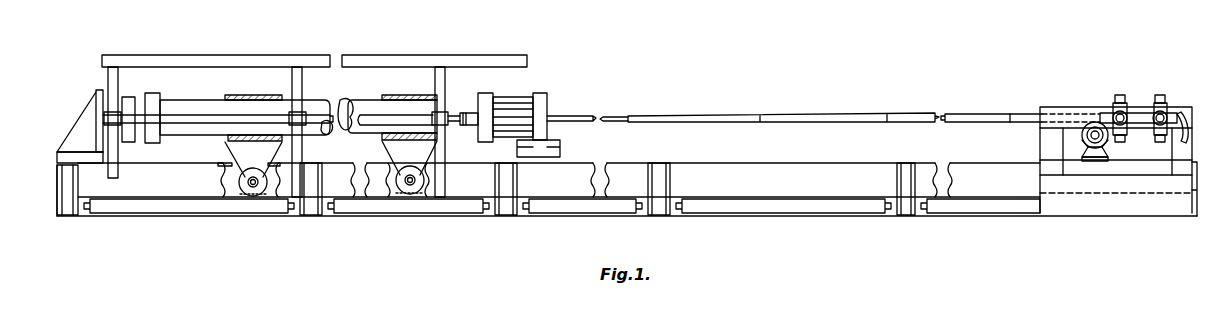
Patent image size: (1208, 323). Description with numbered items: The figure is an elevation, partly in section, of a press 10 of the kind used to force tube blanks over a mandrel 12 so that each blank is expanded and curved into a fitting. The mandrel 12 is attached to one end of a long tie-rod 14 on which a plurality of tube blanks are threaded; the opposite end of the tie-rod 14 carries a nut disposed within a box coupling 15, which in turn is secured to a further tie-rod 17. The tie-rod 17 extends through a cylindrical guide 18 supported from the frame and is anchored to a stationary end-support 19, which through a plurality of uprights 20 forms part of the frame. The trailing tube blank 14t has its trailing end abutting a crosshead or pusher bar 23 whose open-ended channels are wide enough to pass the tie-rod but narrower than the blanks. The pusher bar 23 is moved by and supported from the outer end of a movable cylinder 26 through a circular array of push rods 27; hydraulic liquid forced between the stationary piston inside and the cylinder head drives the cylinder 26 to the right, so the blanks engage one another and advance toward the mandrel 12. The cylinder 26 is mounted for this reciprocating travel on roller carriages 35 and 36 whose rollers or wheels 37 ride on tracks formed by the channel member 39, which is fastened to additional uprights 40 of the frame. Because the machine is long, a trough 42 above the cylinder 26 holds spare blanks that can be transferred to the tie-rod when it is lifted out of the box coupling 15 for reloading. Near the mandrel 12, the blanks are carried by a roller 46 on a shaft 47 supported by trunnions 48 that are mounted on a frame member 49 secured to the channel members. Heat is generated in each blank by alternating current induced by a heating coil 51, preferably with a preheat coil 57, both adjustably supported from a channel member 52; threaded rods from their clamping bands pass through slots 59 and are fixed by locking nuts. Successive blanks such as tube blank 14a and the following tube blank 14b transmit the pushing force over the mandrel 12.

The press 10 is at (712, 53).
The mandrel 12 is at (1180, 128).
The tie-rod 14 is at (595, 117).
The tube blank 14a is at (1018, 117).
The tube blank 14b is at (963, 117).
The trailing tube blank 14t is at (556, 120).
The box coupling 15 is at (482, 118).
The tie-rod 17 is at (335, 118).
The cylindrical guide 18 is at (358, 118).
The stationary end-support 19 is at (88, 118).
The uprights 20 is at (59, 192).
The crosshead or pusher bar 23 is at (538, 98).
The movable cylinder 26 is at (183, 108).
The push rods 27 is at (503, 107).
The roller carriage 35 is at (250, 98).
The roller carriage 36 is at (399, 97).
The rollers or wheels 37 is at (262, 184).
The channel member 39 is at (236, 188).
The uprights 40 is at (312, 203).
The trough 42 is at (195, 62).
The roller 46 is at (1086, 141).
The shaft 47 is at (1108, 139).
The trunnions 48 is at (1102, 132).
The frame member 49 is at (1095, 156).
The heating coil 51 is at (1160, 94).
The channel member 52 is at (1066, 108).
The preheat coil 57 is at (1120, 94).
The slots 59 is at (1140, 114).